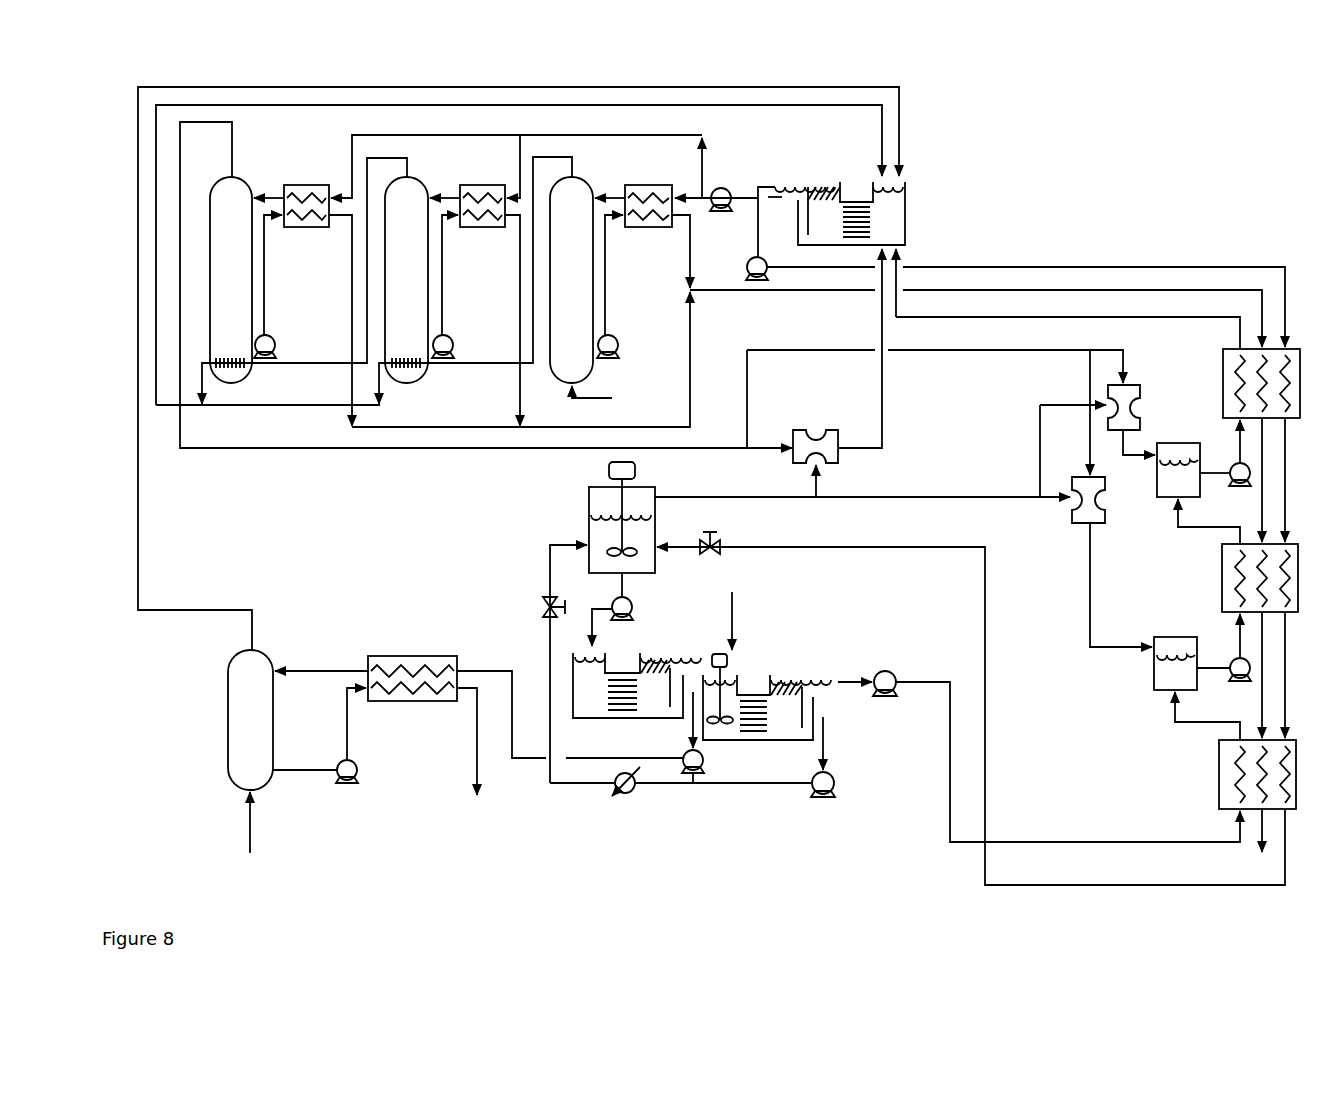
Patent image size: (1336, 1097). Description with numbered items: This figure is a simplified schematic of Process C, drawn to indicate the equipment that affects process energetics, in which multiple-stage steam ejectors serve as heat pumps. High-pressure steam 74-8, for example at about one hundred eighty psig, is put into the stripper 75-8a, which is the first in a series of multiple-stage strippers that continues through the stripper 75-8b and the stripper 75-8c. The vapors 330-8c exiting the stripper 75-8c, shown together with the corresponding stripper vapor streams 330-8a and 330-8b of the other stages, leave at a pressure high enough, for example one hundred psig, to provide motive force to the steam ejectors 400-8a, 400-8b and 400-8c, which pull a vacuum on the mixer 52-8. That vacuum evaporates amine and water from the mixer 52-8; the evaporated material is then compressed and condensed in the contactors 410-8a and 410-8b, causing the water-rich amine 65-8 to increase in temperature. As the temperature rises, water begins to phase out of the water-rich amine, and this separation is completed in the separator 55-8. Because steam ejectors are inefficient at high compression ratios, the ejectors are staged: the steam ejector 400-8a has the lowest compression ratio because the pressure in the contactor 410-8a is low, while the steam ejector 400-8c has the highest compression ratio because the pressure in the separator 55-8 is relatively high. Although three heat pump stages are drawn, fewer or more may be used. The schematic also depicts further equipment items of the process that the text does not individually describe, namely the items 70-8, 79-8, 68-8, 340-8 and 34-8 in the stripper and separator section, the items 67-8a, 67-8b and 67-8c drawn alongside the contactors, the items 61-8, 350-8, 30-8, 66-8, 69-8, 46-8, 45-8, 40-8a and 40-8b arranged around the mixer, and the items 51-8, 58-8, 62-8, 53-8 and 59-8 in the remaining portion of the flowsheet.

The vapors 330-8c is at (236, 178).
The vapor line from second evaporator 330-8b is at (410, 178).
The vapor line from first evaporator 330-8a is at (575, 178).
The stripper 75-8c is at (231, 280).
The second evaporator column 75-8b is at (406, 280).
The stripper 75-8a is at (571, 280).
The heat exchanger 70-8 is at (290, 228).
The recirculation pump and line 79-8 is at (266, 334).
The pump 68-8 is at (736, 192).
The separator 55-8 is at (906, 185).
The condensate line 340-8 is at (242, 405).
The pump and water line 34-8 is at (757, 230).
The high-pressure steam 74-8 is at (600, 395).
The steam ejector 400-8c is at (833, 430).
The steam ejector 400-8b is at (1140, 392).
The steam ejector 400-8a is at (1085, 500).
The contactor 410-8b is at (1157, 480).
The contactor 410-8a is at (1153, 668).
The heat exchanger 67-8a is at (1223, 380).
The heat exchanger 67-8b is at (1222, 598).
The heat exchanger 67-8c is at (1218, 748).
The mixer 52-8 is at (588, 512).
The valve and feed line 61-8 is at (550, 588).
The pump 350-8 is at (627, 583).
The feed inlet 30-8 is at (735, 632).
The water-rich amine 65-8 is at (857, 678).
The pump 66-8 is at (880, 697).
The line 69-8 is at (827, 725).
The pump 46-8 is at (693, 787).
The flow meter 45-8 is at (625, 797).
The line 51-8 is at (498, 668).
The heat exchanger 58-8 is at (385, 701).
The concentrated product line 62-8 is at (477, 734).
The stripping column 53-8 is at (228, 770).
The steam inlet 59-8 is at (250, 836).
The settling tank 40-8a is at (590, 720).
The settling tank 40-8b is at (730, 742).